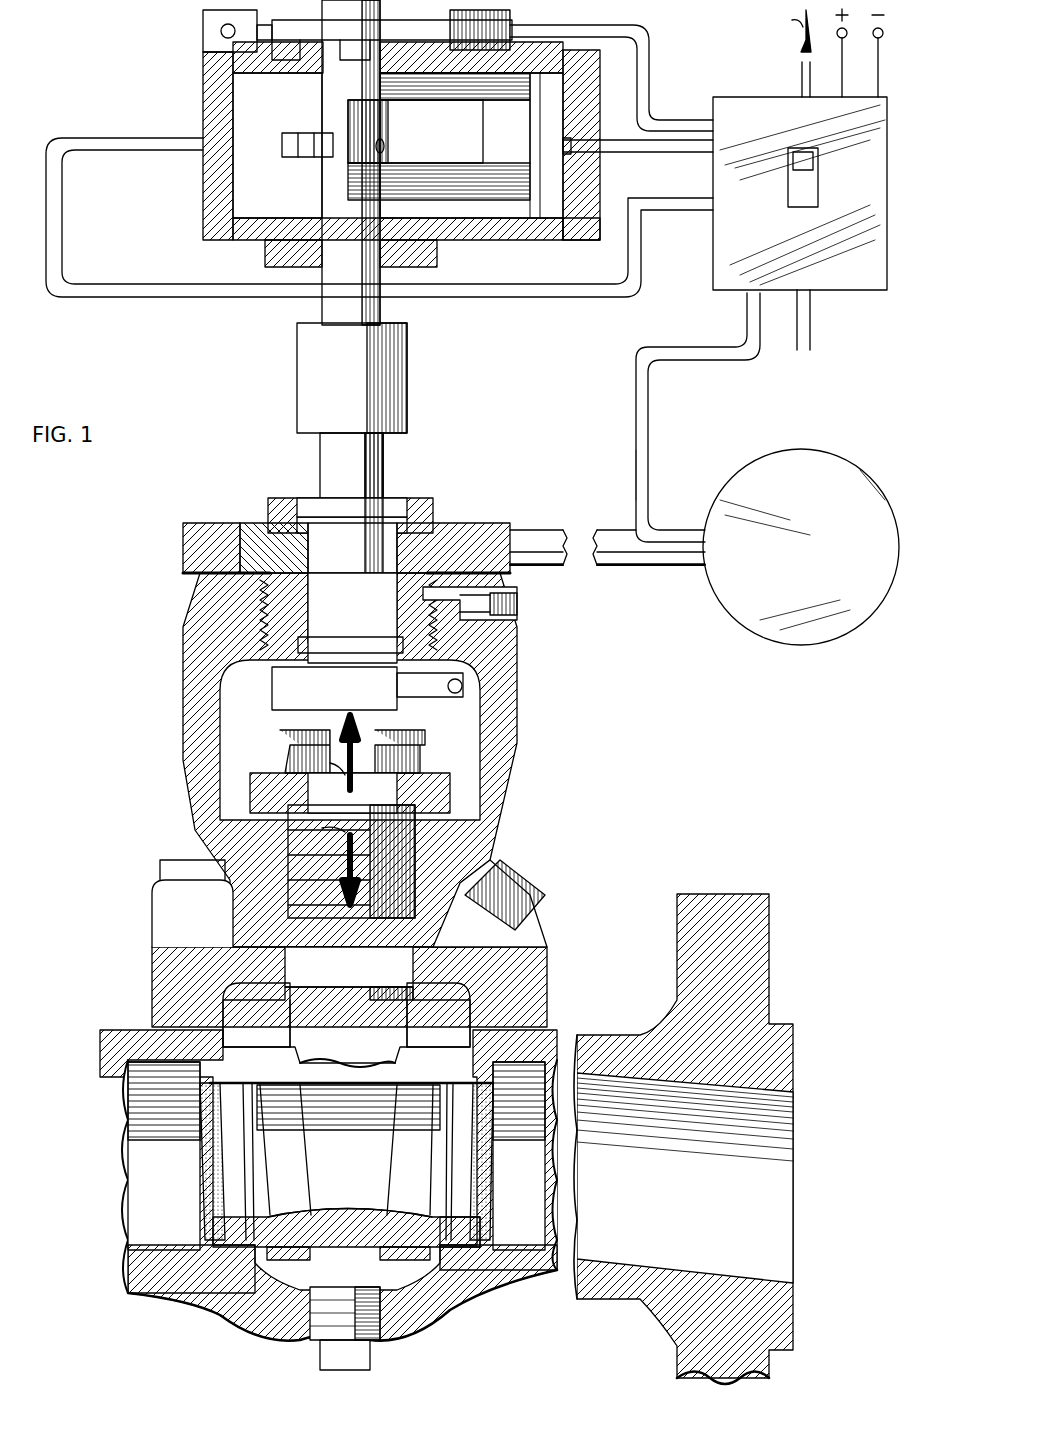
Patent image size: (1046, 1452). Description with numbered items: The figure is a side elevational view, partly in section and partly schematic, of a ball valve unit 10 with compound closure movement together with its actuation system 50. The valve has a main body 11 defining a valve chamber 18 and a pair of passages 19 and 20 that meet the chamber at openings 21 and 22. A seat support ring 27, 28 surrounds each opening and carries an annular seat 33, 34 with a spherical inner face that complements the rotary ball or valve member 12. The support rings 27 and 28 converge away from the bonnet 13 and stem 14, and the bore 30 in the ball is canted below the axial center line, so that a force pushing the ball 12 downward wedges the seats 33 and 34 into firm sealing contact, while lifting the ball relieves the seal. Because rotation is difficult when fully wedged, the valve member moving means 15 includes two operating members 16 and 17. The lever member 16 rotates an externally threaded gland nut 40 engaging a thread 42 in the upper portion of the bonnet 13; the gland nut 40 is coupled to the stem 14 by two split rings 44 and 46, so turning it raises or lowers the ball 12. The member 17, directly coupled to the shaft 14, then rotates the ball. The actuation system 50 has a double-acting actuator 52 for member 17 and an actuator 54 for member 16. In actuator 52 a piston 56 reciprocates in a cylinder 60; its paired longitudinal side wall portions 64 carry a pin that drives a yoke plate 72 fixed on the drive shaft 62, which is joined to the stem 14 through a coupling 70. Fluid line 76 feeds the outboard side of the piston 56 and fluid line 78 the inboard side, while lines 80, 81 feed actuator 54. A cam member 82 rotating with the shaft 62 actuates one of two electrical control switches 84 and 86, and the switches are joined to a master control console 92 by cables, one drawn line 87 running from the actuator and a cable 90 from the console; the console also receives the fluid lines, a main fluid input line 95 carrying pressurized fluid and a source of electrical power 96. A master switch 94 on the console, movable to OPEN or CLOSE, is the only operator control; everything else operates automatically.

The ball valve unit 10 is at (570, 800).
The main body 11 is at (540, 1010).
The rotary ball or valve member 12 is at (388, 1045).
The cover or bonnet 13 is at (505, 690).
The shaft or stem 14 is at (348, 578).
The valve member moving means or assembly 15 is at (198, 576).
The operating member (lever member) 16 is at (605, 570).
The operating member 17 is at (320, 455).
The valve chamber 18 is at (350, 1280).
The passage 19 is at (520, 1233).
The passage 20 is at (177, 1161).
The opening 21 is at (518, 1115).
The opening 22 is at (210, 1110).
The seat support ring 27 is at (470, 1215).
The seat support ring 28 is at (218, 1230).
The bore (base) of the ball member 30 is at (340, 1200).
The annular seal or seat 33 is at (447, 1047).
The annular seal or seat 34 is at (254, 1047).
The gland nut 40 is at (262, 522).
The thread 42 is at (255, 600).
The split ring 44 is at (402, 518).
The split ring 46 is at (345, 640).
The actuation system 50 is at (508, 350).
The actuator 52 is at (470, 248).
The actuator 54 is at (718, 599).
The piston 56 is at (510, 162).
The cylinder 60 is at (553, 232).
The drive shaft 62 is at (277, 145).
The longitudinal side wall portions 64 is at (430, 172).
The coupling 70 is at (297, 382).
The yoke plate 72 is at (334, 131).
The fluid line 76 is at (610, 150).
The fluid line 78 is at (670, 197).
The fluid carrying line 80 is at (654, 394).
The fluid carrying line 81 is at (648, 396).
The cam member 82 is at (295, 30).
The electrical control switch 84 is at (203, 35).
The electrical control switch 86 is at (465, 80).
The conduit 87 is at (684, 118).
The wire or cable 90 is at (812, 330).
The master control console 92 is at (862, 280).
The master switch or control member 94 is at (788, 170).
The main or master fluid input line 95 is at (800, 70).
The source of electrical power 96 is at (875, 85).